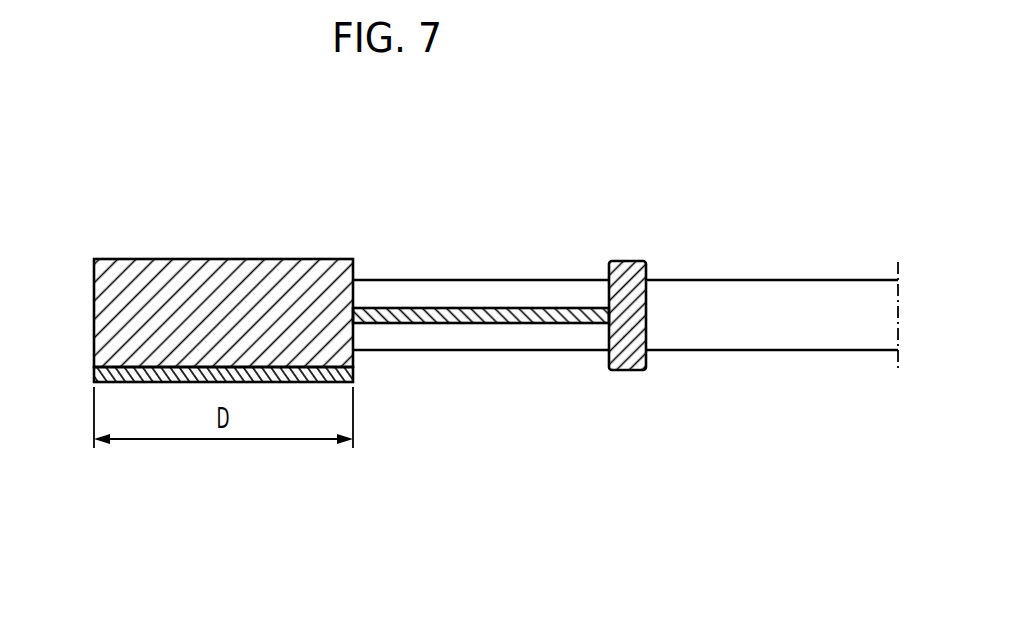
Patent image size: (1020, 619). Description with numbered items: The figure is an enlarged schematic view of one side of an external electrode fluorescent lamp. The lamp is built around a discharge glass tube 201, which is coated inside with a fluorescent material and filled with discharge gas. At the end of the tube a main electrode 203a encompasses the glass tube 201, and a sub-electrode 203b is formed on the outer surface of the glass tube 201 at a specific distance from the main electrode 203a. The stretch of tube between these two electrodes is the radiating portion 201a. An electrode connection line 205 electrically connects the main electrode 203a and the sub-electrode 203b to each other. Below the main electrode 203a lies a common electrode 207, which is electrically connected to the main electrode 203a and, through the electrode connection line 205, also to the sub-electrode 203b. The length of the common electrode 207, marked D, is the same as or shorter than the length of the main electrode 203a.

The discharge glass tube 201 is at (787, 293).
The radiating portion 201a is at (531, 293).
The main electrode 203a is at (231, 268).
The sub-electrode 203b is at (627, 265).
The electrode connection line 205 is at (432, 312).
The common electrode 207 is at (353, 378).